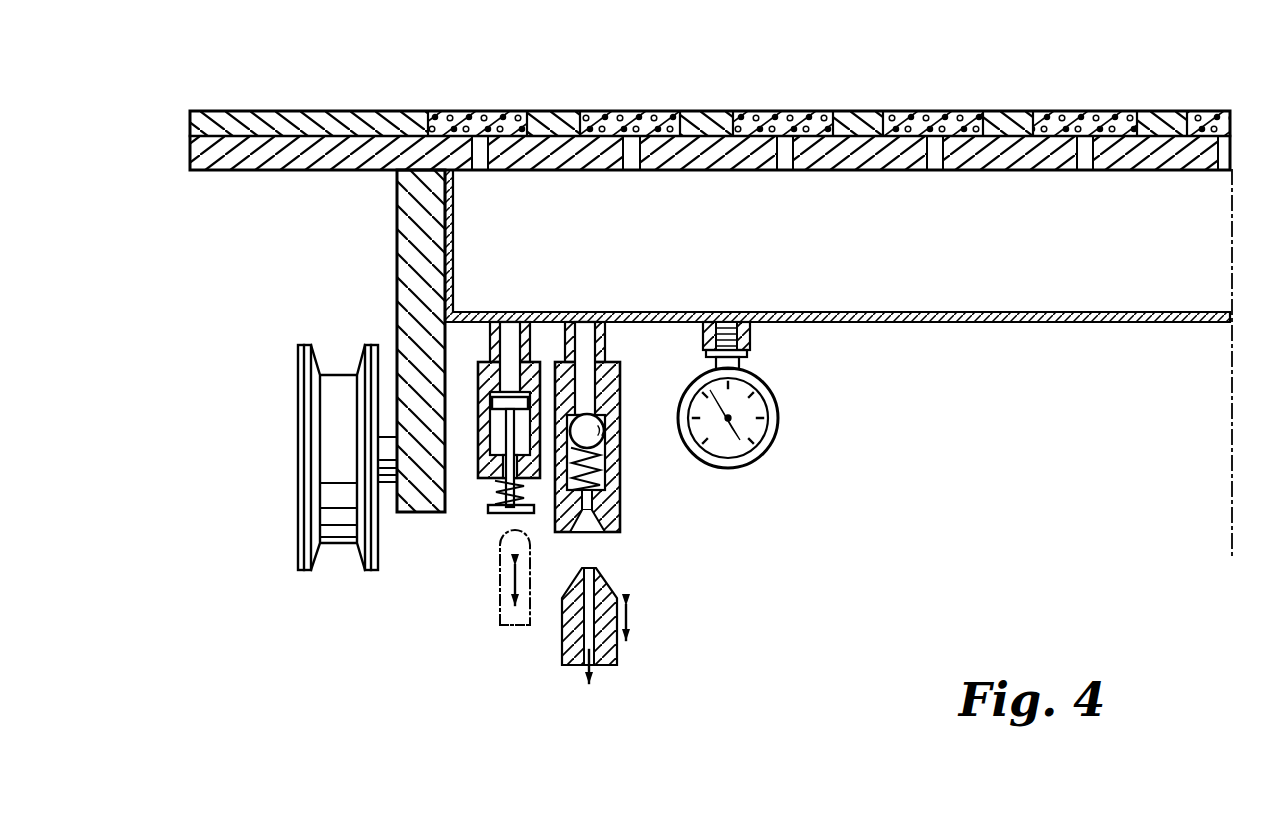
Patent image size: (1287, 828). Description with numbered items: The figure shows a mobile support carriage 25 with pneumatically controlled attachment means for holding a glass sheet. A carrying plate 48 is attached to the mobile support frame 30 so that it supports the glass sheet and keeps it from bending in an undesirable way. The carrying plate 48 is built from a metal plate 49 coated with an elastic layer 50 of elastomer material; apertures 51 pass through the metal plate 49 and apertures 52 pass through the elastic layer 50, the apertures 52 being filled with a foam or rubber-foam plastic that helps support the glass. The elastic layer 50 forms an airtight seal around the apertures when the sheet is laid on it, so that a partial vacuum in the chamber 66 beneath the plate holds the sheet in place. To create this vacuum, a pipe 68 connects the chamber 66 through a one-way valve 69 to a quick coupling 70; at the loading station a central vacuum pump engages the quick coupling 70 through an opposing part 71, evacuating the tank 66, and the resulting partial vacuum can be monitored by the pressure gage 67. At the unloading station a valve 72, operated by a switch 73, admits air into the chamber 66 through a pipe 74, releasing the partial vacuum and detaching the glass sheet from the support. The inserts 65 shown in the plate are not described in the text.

The support carriage 25 is at (377, 341).
The mobile support frame 30 is at (408, 262).
The carrying plate 48 is at (711, 290).
The metal plate 49 is at (222, 166).
The elastic layer 50 is at (320, 120).
The apertures 51 is at (480, 164).
The apertures 52 is at (518, 120).
The porous inserts 65 is at (470, 120).
The chamber 66 is at (1023, 312).
The pressure gage 67 is at (762, 425).
The pipe 68 is at (621, 414).
The one-way valve 69 is at (612, 478).
The quick coupling 70 is at (588, 524).
The opposing part 71 is at (562, 648).
The valve 72 is at (480, 487).
The switch 73 is at (500, 585).
The pipe 74 is at (492, 414).